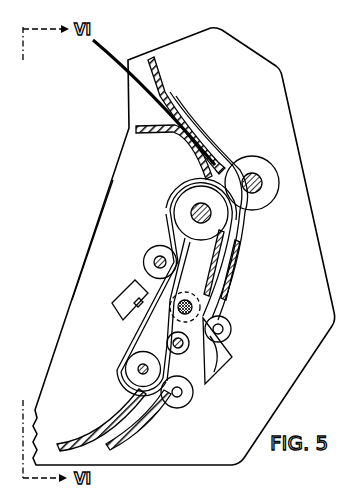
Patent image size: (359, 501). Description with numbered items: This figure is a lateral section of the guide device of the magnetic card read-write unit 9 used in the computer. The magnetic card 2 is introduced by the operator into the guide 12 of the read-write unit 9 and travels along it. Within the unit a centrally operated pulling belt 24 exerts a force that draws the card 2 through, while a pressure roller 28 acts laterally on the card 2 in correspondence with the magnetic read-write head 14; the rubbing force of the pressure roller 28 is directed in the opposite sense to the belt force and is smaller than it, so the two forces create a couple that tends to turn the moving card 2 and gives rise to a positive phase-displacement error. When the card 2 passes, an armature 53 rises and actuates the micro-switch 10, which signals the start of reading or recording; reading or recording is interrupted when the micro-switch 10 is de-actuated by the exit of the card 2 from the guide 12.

The magnetic card 2 is at (108, 50).
The read-write unit 9 is at (75, 248).
The micro-switch 10 is at (110, 303).
The guide 12 is at (150, 112).
The magnetic read-write head 14 is at (215, 372).
The pulling belt 24 is at (128, 353).
The pressure roller 28 is at (168, 343).
The armature 53 is at (162, 325).